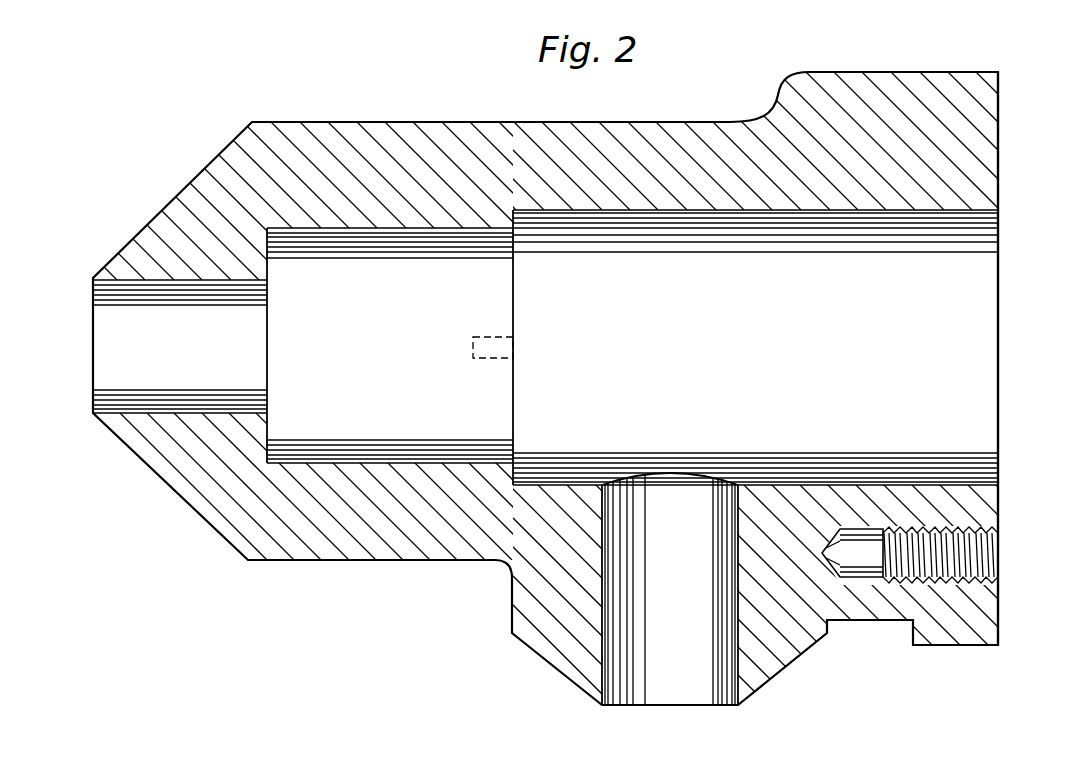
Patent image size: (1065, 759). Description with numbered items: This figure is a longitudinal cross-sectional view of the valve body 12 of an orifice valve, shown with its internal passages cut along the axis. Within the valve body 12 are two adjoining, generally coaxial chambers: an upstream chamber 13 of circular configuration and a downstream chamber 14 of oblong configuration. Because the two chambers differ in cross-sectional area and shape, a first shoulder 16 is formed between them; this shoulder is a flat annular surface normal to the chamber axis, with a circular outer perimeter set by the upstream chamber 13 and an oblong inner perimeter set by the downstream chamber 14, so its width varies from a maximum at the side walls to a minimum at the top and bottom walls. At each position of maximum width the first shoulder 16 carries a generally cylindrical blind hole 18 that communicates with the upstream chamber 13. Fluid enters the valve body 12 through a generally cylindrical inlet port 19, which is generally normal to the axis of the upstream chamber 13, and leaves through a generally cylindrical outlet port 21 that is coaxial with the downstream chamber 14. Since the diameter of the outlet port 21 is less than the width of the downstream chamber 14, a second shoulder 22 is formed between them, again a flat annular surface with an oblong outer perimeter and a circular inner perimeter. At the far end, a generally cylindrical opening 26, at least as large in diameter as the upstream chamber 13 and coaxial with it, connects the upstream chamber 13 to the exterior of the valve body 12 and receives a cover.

The valve body 12 is at (476, 116).
The upstream chamber 13 is at (621, 232).
The downstream chamber 14 is at (307, 253).
The first shoulder 16 is at (514, 298).
The blind hole 18 is at (481, 358).
The inlet port 19 is at (705, 697).
The outlet port 21 is at (107, 338).
The second shoulder 22 is at (267, 440).
The opening 26 is at (983, 365).